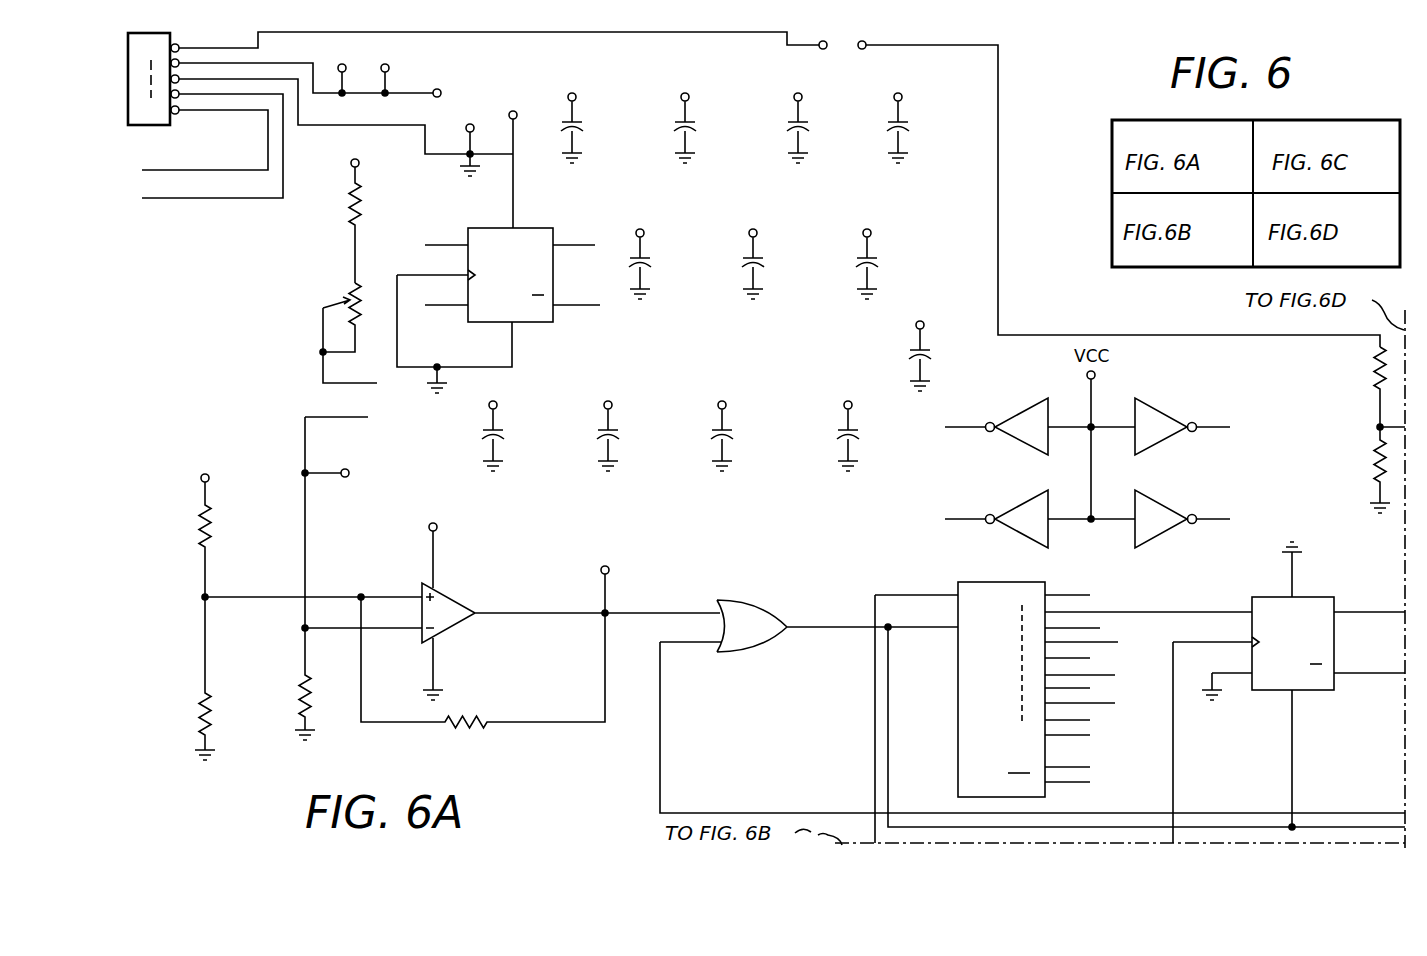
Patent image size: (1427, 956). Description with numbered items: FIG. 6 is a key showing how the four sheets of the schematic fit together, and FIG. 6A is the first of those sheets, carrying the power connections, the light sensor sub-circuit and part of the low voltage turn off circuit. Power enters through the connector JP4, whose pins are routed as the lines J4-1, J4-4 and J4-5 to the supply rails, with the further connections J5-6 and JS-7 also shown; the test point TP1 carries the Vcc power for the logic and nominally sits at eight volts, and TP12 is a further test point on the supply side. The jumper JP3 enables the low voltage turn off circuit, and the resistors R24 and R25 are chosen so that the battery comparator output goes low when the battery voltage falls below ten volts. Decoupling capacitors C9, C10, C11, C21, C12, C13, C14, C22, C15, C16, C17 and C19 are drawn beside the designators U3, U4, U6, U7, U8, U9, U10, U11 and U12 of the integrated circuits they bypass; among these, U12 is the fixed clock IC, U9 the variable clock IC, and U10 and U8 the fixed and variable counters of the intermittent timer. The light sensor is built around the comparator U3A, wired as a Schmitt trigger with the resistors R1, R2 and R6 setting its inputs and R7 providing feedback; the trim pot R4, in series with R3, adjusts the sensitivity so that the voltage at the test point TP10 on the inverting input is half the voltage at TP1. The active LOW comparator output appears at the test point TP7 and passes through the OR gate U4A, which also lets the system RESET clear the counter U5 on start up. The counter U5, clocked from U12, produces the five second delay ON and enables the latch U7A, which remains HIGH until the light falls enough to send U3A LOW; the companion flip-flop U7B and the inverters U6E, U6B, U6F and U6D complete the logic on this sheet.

The power connector JP4 is at (159, 81).
The jumper JP3 is at (1099, 181).
The connector pin J4-1 is at (499, 29).
The connector pin J4-4 is at (212, 146).
The connector pin J4-5 is at (205, 140).
The connector pin J5-6 is at (346, 373).
The connector pin JS-7 is at (336, 512).
The test point TP1 is at (327, 70).
The test point TP7 is at (624, 587).
The test point TP10 is at (341, 461).
The test point 12 TP12 is at (356, 153).
The resistor 40K R1 is at (221, 522).
The resistor 40K R2 is at (223, 677).
The resistor 33K R3 is at (338, 208).
The trim pot R4 is at (316, 321).
The resistor 40K R6 is at (322, 682).
The resistor 1M R7 is at (483, 673).
The resistor R24 is at (1362, 388).
The resistor R25 is at (1350, 470).
The bypass capacitor 0.1uF C9 is at (593, 115).
The bypass capacitor 0.1uF C10 is at (708, 115).
The bypass capacitor 0.1uF C11 is at (821, 115).
The bypass capacitor 0.1uF C12 is at (663, 251).
The bypass capacitor 0.1uF C13 is at (776, 251).
The bypass capacitor 0.1uF C14 is at (890, 251).
The bypass capacitor 0.1uF C15 is at (516, 423).
The bypass capacitor 0.1uF C16 is at (631, 423).
The bypass capacitor 0.1uF C17 is at (745, 423).
The bypass capacitor 0.1uF C19 is at (871, 423).
The bypass capacitor 0.1uF C21 is at (921, 115).
The bypass capacitor 0.1uF C22 is at (943, 343).
The comparator U3A is at (462, 600).
The OR gate U4A is at (1032, 692).
The counter U5 is at (1140, 708).
The inverter 4049 U6B is at (1160, 430).
The inverter 4049 U6D is at (1160, 522).
The inverter 4049 U6E is at (1018, 430).
The inverter 4049 U6F is at (1018, 522).
The latch U7A is at (1289, 692).
The JK flip-flop 4027 U7B is at (498, 293).
The IC U3 bypass U3 is at (566, 191).
The IC U4 bypass U4 is at (681, 191).
The IC U6 bypass U6 is at (631, 327).
The IC U7 bypass U7 is at (741, 327).
The counter U8 is at (856, 327).
The RC timing IC U9 is at (491, 491).
The counter U10 is at (610, 491).
The IC U11 bypass U11 is at (722, 491).
The RC timing IC U12 is at (852, 491).